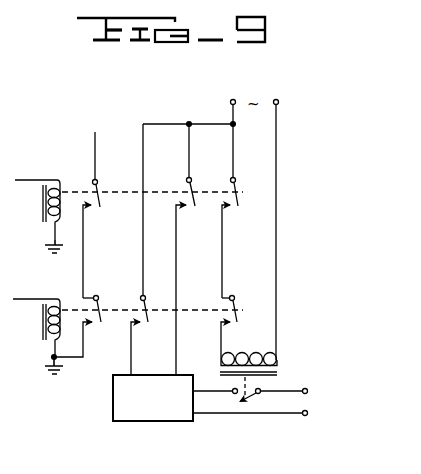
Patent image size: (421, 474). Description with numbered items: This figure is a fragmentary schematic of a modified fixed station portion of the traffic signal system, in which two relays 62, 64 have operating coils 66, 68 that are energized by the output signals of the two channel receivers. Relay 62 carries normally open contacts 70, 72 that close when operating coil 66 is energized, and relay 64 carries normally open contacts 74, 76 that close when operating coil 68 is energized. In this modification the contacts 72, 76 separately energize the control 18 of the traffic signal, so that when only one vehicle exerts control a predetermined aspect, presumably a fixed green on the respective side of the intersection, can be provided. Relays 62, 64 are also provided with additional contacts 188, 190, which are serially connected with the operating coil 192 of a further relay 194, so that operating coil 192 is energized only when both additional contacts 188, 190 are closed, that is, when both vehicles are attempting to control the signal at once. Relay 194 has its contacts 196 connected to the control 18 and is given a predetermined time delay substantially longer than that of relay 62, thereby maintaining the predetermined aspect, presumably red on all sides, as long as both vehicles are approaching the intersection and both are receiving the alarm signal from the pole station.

The control unit 18 is at (113, 403).
The relay 62 is at (30, 218).
The relay 64 is at (30, 340).
The operating coil 66 is at (33, 179).
The operating coil 68 is at (33, 299).
The normally open contacts 70 is at (100, 192).
The normally open contacts 72 is at (191, 194).
The normally open contacts 74 is at (100, 306).
The normally open contacts 76 is at (146, 306).
The additional contacts 188 is at (235, 194).
The additional contacts 190 is at (236, 306).
The operating coil 192 is at (258, 354).
The relay 194 is at (317, 370).
The contacts 196 is at (250, 396).